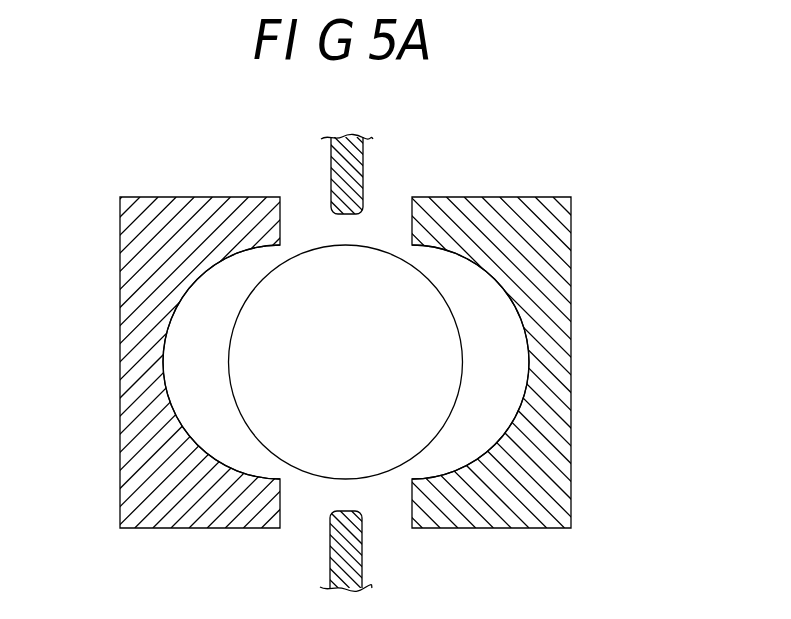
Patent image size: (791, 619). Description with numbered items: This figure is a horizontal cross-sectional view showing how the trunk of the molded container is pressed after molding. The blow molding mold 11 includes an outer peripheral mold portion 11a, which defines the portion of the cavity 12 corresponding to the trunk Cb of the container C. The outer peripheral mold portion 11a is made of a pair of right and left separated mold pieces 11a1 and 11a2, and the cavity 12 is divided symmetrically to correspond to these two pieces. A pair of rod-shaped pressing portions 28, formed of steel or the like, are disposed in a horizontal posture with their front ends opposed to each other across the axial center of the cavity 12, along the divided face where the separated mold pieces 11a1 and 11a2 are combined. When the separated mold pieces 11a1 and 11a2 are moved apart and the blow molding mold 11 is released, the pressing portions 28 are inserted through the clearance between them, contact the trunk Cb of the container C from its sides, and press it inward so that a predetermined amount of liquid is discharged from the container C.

The blow molding mold 11 is at (473, 198).
The outer peripheral mold portion 11a is at (571, 236).
The separated mold piece 11a1 is at (148, 452).
The separated mold piece 11a2 is at (533, 467).
The cavity 12 is at (163, 363).
The pressing portion 28 is at (338, 171).
The container C is at (462, 358).
The trunk Cb is at (455, 315).